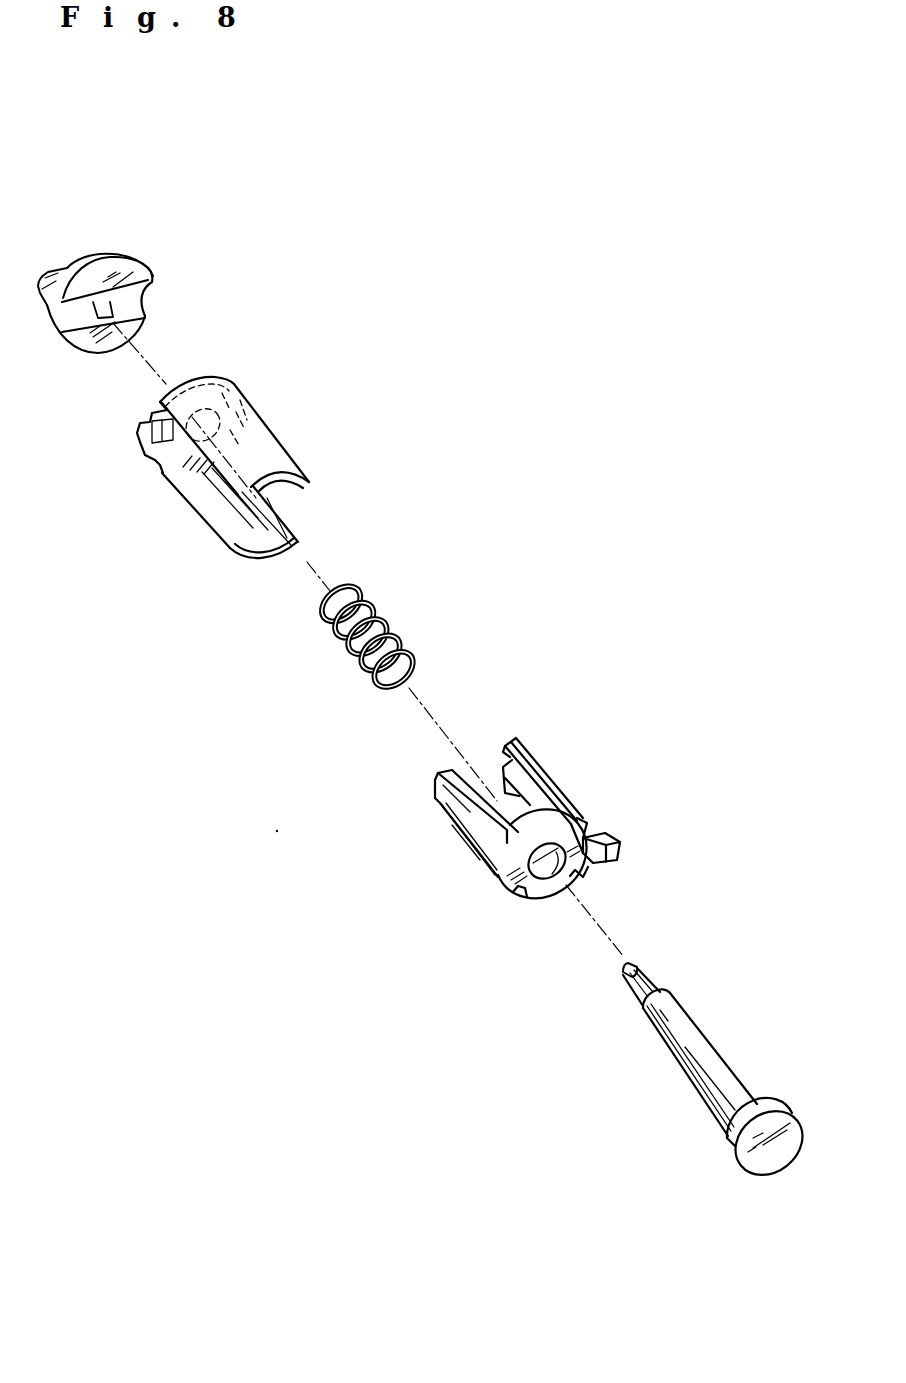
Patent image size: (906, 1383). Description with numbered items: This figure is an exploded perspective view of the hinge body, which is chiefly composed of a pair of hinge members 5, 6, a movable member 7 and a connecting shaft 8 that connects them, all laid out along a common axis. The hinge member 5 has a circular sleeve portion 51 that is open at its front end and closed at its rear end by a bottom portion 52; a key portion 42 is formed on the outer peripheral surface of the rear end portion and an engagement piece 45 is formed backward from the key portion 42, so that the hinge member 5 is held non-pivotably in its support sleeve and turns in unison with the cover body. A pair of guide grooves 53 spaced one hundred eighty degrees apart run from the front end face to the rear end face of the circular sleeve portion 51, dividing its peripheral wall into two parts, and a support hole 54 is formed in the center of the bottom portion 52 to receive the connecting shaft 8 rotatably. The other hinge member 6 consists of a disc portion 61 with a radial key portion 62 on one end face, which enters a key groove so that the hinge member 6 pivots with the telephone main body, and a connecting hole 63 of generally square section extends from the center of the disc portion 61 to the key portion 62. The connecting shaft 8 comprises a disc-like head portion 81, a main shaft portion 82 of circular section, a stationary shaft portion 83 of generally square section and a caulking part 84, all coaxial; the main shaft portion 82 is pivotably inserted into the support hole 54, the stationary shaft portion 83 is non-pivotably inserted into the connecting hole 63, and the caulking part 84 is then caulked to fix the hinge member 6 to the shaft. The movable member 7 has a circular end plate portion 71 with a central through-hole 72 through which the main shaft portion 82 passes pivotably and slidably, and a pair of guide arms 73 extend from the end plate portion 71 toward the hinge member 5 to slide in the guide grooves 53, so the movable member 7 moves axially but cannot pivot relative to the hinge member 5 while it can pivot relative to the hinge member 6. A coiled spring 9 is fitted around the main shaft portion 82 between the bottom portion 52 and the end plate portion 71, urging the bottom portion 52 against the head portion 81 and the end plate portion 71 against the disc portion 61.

The hinge member 5 is at (563, 778).
The circular sleeve portion 51 is at (470, 838).
The bottom portion 52 is at (552, 822).
The guide grooves 53 is at (503, 768).
The support hole 54 is at (553, 864).
The key portion 42 is at (588, 826).
The engagement piece 45 is at (624, 848).
The hinge member 6 is at (122, 242).
The disc portion 61 is at (100, 258).
The key portion 62 is at (43, 276).
The connecting hole 63 is at (108, 318).
The movable member 7 is at (213, 365).
The end plate portion 71 is at (167, 474).
The through-hole 72 is at (232, 386).
The guide arms 73 is at (292, 452).
The connecting shaft 8 is at (719, 1037).
The head portion 81 is at (765, 1158).
The main shaft portion 82 is at (683, 1074).
The stationary shaft portion 83 is at (636, 996).
The caulking part 84 is at (622, 975).
The coiled spring 9 is at (385, 627).